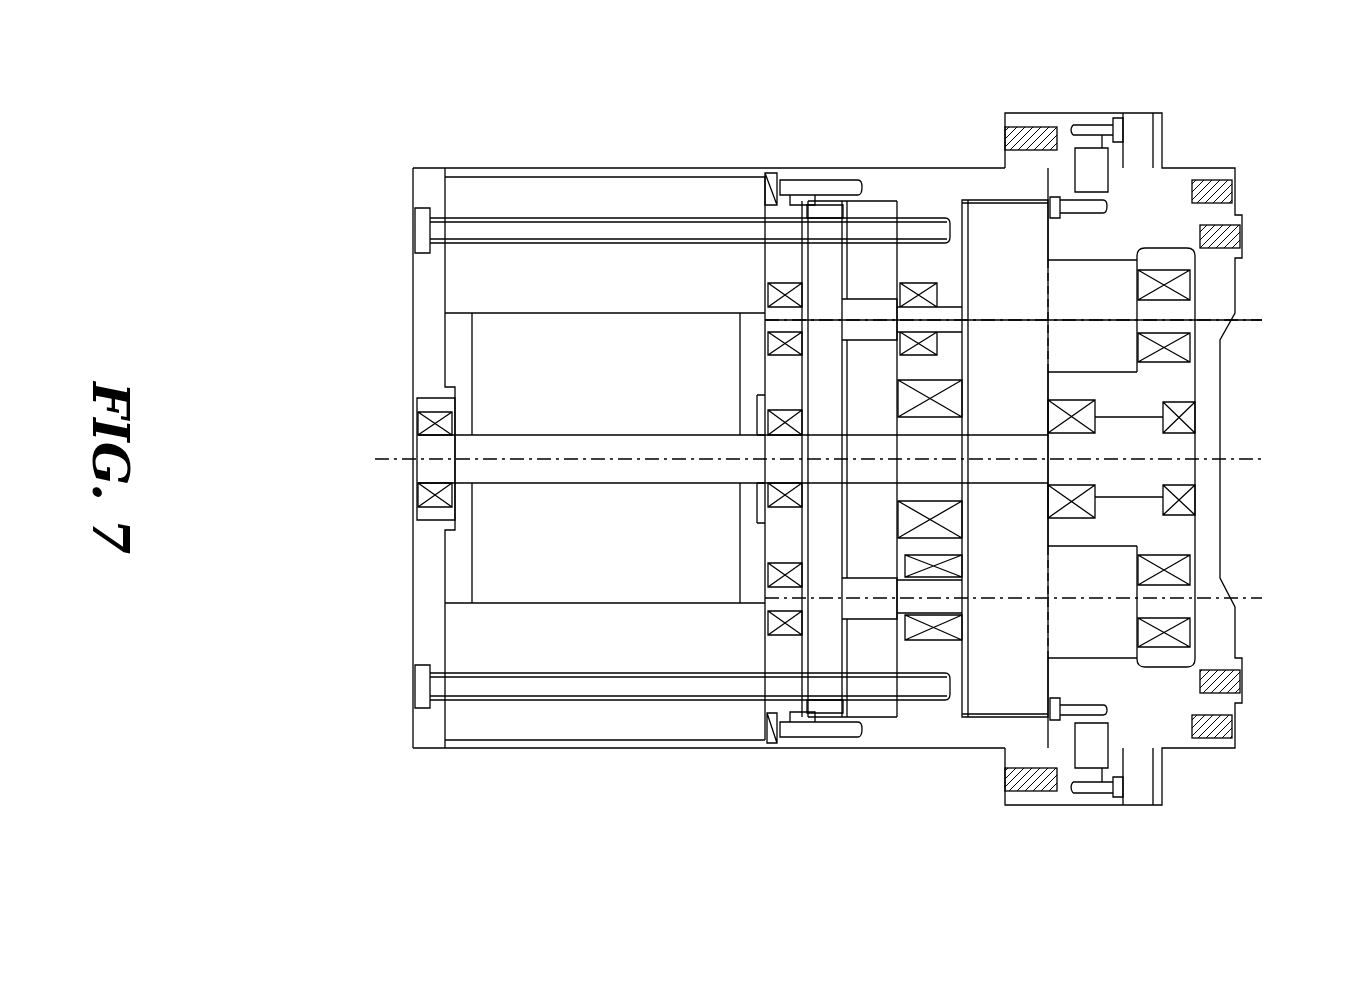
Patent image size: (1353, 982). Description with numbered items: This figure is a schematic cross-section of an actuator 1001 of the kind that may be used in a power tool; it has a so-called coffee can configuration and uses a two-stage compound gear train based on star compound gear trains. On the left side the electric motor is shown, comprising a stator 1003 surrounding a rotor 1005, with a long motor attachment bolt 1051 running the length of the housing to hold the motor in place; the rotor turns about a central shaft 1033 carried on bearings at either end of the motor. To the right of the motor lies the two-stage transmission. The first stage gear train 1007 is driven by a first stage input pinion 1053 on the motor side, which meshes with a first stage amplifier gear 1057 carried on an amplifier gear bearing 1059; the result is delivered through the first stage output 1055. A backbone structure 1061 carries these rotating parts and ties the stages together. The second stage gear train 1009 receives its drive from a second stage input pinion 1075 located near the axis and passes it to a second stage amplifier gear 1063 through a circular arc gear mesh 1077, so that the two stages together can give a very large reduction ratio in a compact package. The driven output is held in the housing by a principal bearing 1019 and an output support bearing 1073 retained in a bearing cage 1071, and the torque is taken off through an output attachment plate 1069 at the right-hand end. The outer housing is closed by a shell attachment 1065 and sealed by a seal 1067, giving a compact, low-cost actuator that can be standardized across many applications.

The actuator 1001 is at (380, 118).
The stator 1003 is at (533, 195).
The rotor 1005 is at (498, 542).
The first stage gear train 1007 is at (818, 798).
The second stage gear train 1009 is at (1105, 818).
The principal bearing 1019 is at (1095, 168).
The shaft 1033 is at (535, 464).
The motor attachment bolt 1051 is at (448, 232).
The first stage input pinion 1053 is at (830, 450).
The first stage output 1055 is at (875, 470).
The first stage amplifier gear 1057 is at (822, 280).
The amplifier gear bearing 1059 is at (933, 638).
The backbone structure 1061 is at (935, 268).
The second stage amplifier gear 1063 is at (1012, 250).
The shell attachment 1065 is at (1020, 108).
The seal 1067 is at (1138, 135).
The output attachment plate 1069 is at (1242, 238).
The bearing cage 1071 is at (1160, 388).
The output support bearing 1073 is at (1194, 418).
The second stage input pinion 1075 is at (1023, 466).
The circular arc gear mesh 1077 is at (1117, 662).